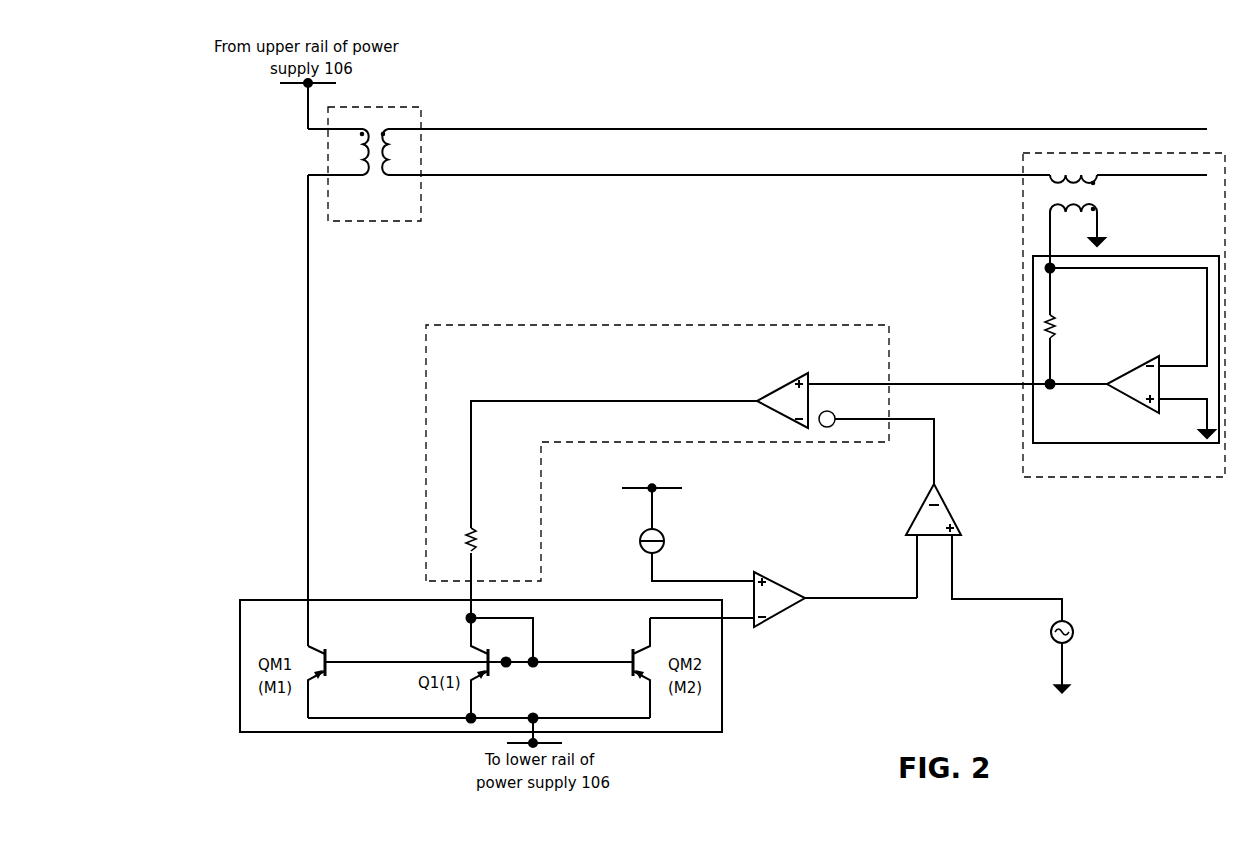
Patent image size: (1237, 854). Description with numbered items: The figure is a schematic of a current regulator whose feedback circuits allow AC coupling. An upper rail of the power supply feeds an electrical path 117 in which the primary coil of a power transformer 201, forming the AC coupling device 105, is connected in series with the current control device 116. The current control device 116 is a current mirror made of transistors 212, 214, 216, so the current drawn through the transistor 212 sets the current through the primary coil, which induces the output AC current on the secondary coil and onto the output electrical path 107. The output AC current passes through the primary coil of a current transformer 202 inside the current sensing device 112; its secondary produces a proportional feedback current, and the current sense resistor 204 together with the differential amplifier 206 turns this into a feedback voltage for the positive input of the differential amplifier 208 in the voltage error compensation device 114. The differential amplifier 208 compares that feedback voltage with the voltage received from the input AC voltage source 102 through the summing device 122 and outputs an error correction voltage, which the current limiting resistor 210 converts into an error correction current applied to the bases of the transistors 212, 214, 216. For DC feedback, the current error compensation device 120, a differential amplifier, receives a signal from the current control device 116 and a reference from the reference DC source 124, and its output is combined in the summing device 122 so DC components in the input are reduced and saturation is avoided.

The input AC voltage source 102 is at (1084, 626).
The AC coupling device 105 is at (426, 104).
The output electrical path 107 is at (654, 183).
The current sensing device 112 is at (1020, 152).
The voltage error compensation device 114 is at (795, 313).
The current control device 116 is at (243, 595).
The electrical path 117 is at (299, 430).
The current error compensation device 120 is at (793, 579).
The summing device 122 is at (973, 509).
The reference DC source 124 is at (673, 540).
The power transformer 201 is at (384, 186).
The current transformer 202 is at (1103, 193).
The current sense resistor 204 is at (1066, 322).
The differential amplifier 206 is at (1136, 357).
The differential amplifier 208 is at (783, 376).
The current limiting resistor 210 is at (486, 540).
The transistor 212 is at (327, 646).
The transistor 214 is at (460, 655).
The transistor 216 is at (625, 651).